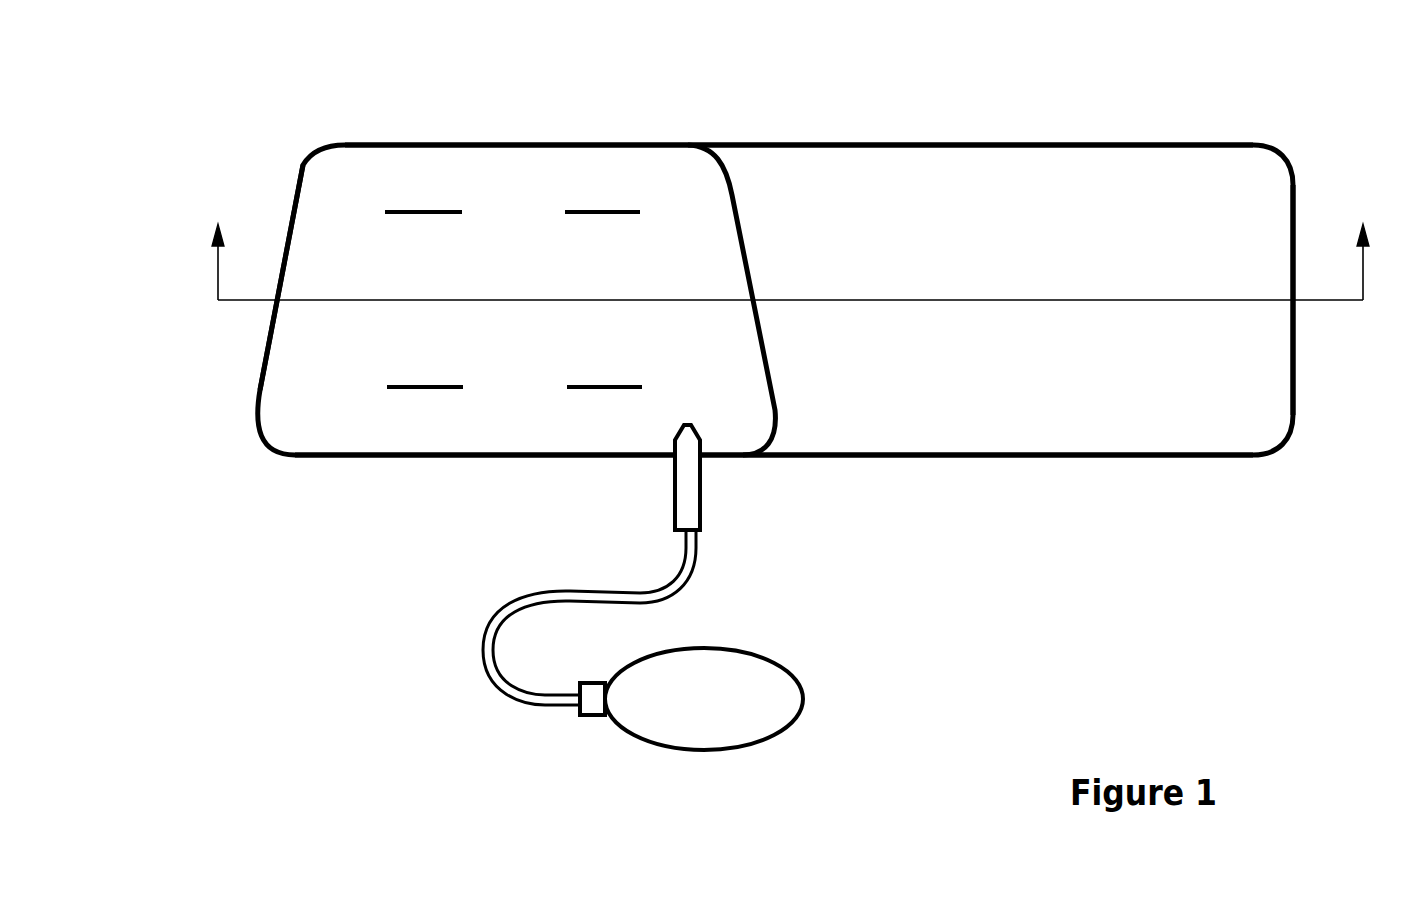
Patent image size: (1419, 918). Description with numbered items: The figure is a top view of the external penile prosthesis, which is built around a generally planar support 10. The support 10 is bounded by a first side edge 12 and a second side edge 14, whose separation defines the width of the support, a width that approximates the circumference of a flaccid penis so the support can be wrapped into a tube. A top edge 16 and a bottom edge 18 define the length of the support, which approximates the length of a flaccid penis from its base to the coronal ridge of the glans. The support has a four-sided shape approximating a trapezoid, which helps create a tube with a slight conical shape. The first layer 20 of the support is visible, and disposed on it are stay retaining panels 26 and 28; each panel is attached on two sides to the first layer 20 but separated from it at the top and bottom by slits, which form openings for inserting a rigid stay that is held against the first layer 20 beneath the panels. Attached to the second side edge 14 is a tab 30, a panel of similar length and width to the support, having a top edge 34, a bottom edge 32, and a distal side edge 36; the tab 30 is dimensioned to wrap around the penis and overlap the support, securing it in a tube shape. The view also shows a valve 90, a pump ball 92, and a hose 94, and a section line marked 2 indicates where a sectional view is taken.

The section line 2- 2 is at (790, 238).
The planar support 10 is at (462, 428).
The first side edge 12 is at (261, 378).
The second side edge 14 is at (762, 347).
The top edge 16 is at (612, 143).
The bottom edge 18 is at (580, 458).
The first layer 20 is at (555, 273).
The stay retaining panel 26 is at (470, 355).
The stay retaining panel 28 is at (643, 355).
The tab 30 is at (1019, 413).
The bottom edge 32 is at (1160, 458).
The top edge 34 is at (1110, 143).
The distal side edge 36 is at (1296, 365).
The valve 90 is at (690, 488).
The pump ball 92 is at (745, 688).
The hose 94 is at (481, 652).